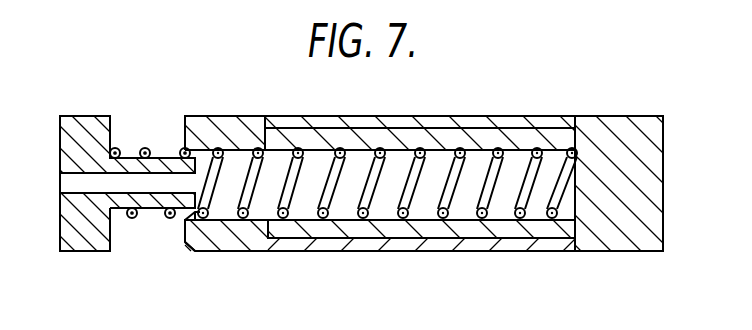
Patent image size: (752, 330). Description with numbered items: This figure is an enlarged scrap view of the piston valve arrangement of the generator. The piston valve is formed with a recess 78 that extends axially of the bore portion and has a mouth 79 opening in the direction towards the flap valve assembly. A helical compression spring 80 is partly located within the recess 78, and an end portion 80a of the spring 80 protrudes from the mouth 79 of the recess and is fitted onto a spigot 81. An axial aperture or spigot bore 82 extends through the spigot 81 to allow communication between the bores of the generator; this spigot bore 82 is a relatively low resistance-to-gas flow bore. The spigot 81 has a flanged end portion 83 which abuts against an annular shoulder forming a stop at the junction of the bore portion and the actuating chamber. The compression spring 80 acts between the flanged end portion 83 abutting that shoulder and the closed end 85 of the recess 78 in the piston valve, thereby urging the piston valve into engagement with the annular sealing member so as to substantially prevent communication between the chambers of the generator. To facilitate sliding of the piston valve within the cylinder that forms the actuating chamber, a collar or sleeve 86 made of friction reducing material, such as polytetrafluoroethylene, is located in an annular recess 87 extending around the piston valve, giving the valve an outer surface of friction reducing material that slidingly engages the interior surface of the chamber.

The recess 78 is at (352, 208).
The mouth 79 is at (212, 247).
The helical compression spring 80 is at (428, 160).
The end portion of the spring 80a is at (182, 149).
The spigot 81 is at (124, 149).
The spigot bore 82 is at (157, 185).
The flanged end portion 83 is at (90, 243).
The closed end of the recess 85 is at (566, 214).
The collar or sleeve 86 is at (552, 124).
The annular recess 87 is at (260, 126).